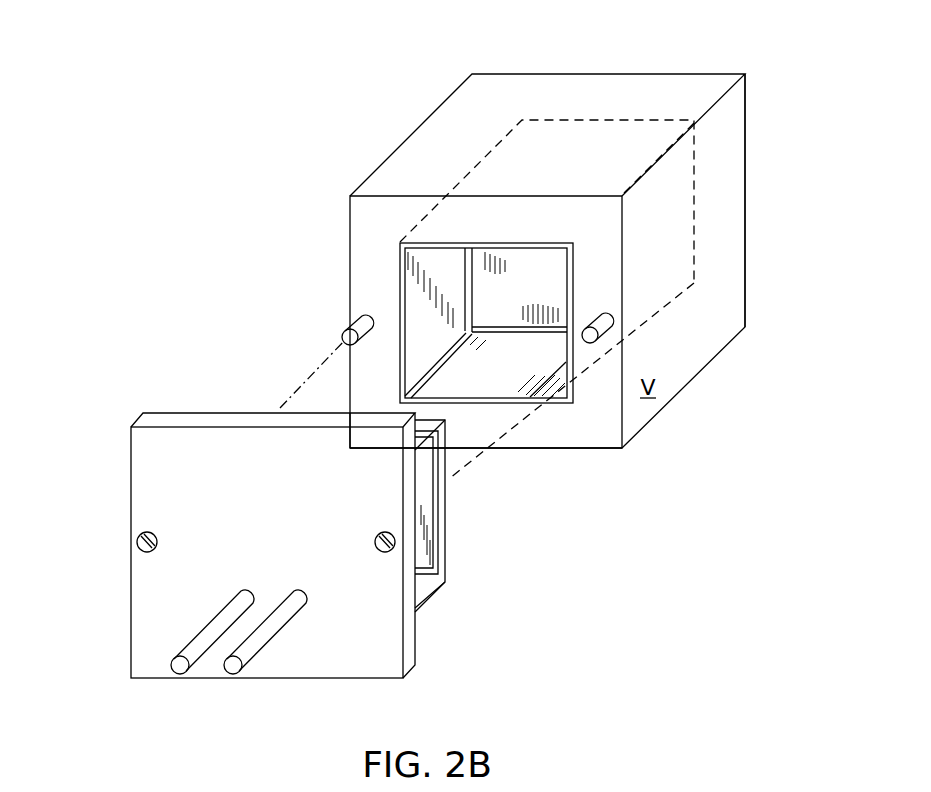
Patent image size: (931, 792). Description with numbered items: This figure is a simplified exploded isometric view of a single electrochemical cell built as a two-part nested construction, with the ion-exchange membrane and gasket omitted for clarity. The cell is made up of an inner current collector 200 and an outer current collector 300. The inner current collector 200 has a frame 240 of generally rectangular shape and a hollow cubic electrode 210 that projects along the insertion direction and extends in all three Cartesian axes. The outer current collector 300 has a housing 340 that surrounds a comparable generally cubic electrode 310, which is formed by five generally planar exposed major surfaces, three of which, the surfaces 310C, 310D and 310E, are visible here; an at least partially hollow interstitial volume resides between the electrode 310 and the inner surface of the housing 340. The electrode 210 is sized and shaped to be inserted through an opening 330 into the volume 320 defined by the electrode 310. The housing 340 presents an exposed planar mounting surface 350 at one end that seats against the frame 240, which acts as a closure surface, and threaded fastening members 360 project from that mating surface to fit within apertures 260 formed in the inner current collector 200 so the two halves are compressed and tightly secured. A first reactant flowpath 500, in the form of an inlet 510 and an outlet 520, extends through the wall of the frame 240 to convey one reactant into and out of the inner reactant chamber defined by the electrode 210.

The inner current collector 200 is at (227, 483).
The electrode 210 is at (430, 506).
The frame 240 is at (243, 491).
The apertures 260 is at (135, 542).
The outer current collector 300 is at (253, 173).
The electrode 310 is at (694, 200).
The major surface 310C is at (420, 331).
The major surface 310D is at (480, 359).
The major surface 310E is at (495, 301).
The volume 320 is at (554, 145).
The opening 330 is at (406, 377).
The housing 340 is at (744, 282).
The planar mounting surface 350 is at (553, 438).
The fastening members 360 is at (613, 325).
The first reactant flowpath 500 is at (197, 639).
The inlet flowpath 510 is at (246, 590).
The outlet flowpath 520 is at (307, 590).